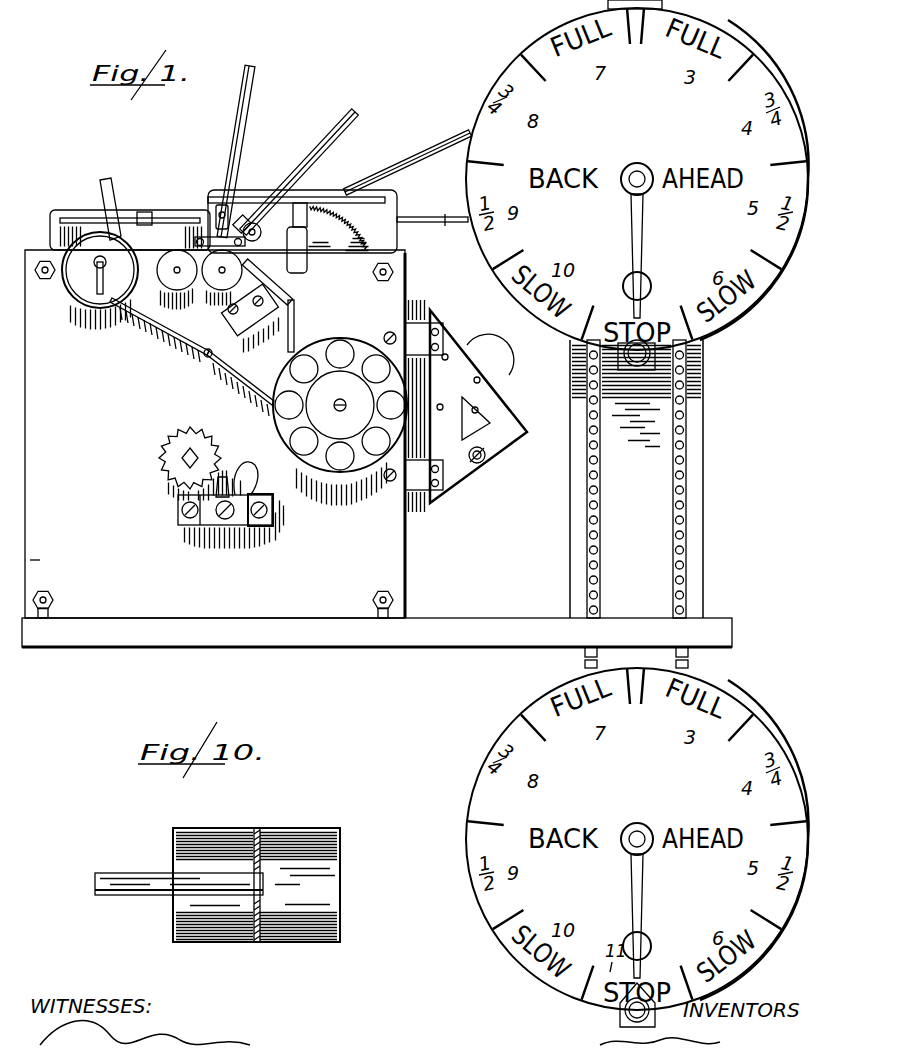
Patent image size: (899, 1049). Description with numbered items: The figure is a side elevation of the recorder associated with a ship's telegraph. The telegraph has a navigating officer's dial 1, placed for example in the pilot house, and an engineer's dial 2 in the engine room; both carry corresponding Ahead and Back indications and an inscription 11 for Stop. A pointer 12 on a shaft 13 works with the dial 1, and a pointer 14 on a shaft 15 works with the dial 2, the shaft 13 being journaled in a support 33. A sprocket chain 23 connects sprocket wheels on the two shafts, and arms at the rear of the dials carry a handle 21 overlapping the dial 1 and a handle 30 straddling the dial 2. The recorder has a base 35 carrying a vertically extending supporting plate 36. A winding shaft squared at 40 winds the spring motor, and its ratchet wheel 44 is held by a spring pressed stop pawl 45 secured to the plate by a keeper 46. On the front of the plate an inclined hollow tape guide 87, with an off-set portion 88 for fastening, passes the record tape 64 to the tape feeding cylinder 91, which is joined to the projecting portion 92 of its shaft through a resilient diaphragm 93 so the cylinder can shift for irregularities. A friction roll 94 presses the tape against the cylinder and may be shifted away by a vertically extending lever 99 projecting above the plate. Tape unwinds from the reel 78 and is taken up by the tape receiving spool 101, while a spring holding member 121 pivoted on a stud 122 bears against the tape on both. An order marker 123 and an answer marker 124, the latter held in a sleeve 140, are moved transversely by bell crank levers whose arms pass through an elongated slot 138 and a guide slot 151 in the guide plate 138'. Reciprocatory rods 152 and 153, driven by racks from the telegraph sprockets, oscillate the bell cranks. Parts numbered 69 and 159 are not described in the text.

In FIG. 1, the navigating officer's dial 1 is at (778, 282).
In FIG. 1, the engineer's dial 2 is at (762, 735).
In FIG. 1, the inscription 11 is at (655, 312).
In FIG. 1, the pointer 12 is at (633, 228).
In FIG. 1, the shaft 13 is at (643, 165).
In FIG. 1, the pointer 14 is at (633, 888).
In FIG. 1, the shaft 15 is at (643, 826).
In FIG. 1, the handle 21 is at (700, 357).
In FIG. 1, the sprocket chain 23 is at (688, 482).
In FIG. 1, the handle 30 is at (628, 1012).
In FIG. 1, the support 33 is at (708, 562).
In FIG. 1, the base 35 is at (413, 648).
In FIG. 1, the supporting plate 36 is at (185, 556).
In FIG. 1, the squared end 40 is at (182, 452).
In FIG. 1, the ratchet wheel 44 is at (160, 460).
In FIG. 1, the stop pawl 45 is at (243, 470).
In FIG. 1, the keeper 46 is at (213, 520).
In FIG. 1, the record tape 64 is at (293, 318).
In FIG. 1, the block 69 is at (235, 313).
In FIG. 1, the tape reel 78 is at (368, 465).
In FIG. 1, the hollow tape guide 87 is at (283, 285).
In FIG. 1, the off-set portion 88 is at (260, 322).
In FIG. 1, the tape feeding cylinder 91 is at (217, 282).
In FIG. 10, the tape feeding cylinder 91 is at (302, 828).
In FIG. 10, the projecting portion of shaft 92 is at (152, 890).
In FIG. 10, the resilient diaphragm 93 is at (256, 838).
In FIG. 1, the friction roll 94 is at (179, 262).
In FIG. 1, the lever 99 is at (105, 180).
In FIG. 1, the tape receiving spool 101 is at (90, 283).
In FIG. 1, the spring holding member 121 is at (172, 338).
In FIG. 1, the stud 122 is at (220, 378).
In FIG. 1, the order marker 123 is at (246, 97).
In FIG. 1, the answer marker 124 is at (350, 126).
In FIG. 1, the elongated slot 138 is at (130, 195).
In FIG. 1, the guide plate 138' is at (239, 206).
In FIG. 1, the sleeve 140 is at (252, 222).
In FIG. 1, the guide slot 151 is at (345, 200).
In FIG. 1, the reciprocatory rod 152 is at (440, 224).
In FIG. 1, the reciprocatory rod 153 is at (446, 135).
In FIG. 1, the bracket 159 is at (263, 210).